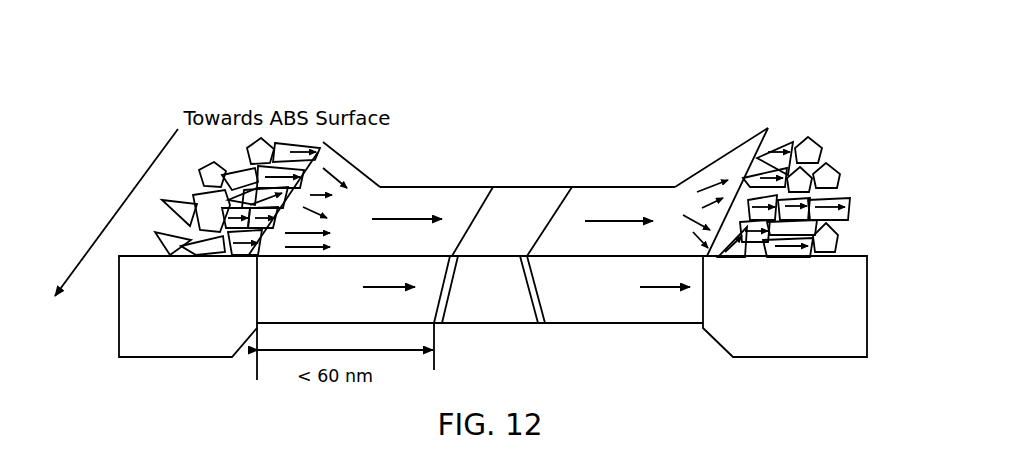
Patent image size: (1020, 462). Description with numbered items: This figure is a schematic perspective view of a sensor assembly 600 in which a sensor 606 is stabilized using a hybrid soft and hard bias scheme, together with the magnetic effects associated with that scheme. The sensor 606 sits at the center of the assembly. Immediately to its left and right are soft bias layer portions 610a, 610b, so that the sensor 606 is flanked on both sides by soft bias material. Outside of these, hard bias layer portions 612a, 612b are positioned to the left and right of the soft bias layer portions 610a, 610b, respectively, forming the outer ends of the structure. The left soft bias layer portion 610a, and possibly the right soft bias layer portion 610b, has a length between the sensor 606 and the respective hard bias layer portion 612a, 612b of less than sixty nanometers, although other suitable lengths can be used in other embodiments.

The sensor assembly 600 is at (638, 85).
The sensor 606 is at (498, 323).
The soft bias layer portion 610a is at (351, 310).
The soft bias layer portion 610b is at (628, 316).
The hard bias layer portion 612a is at (206, 336).
The hard bias layer portion 612b is at (811, 328).